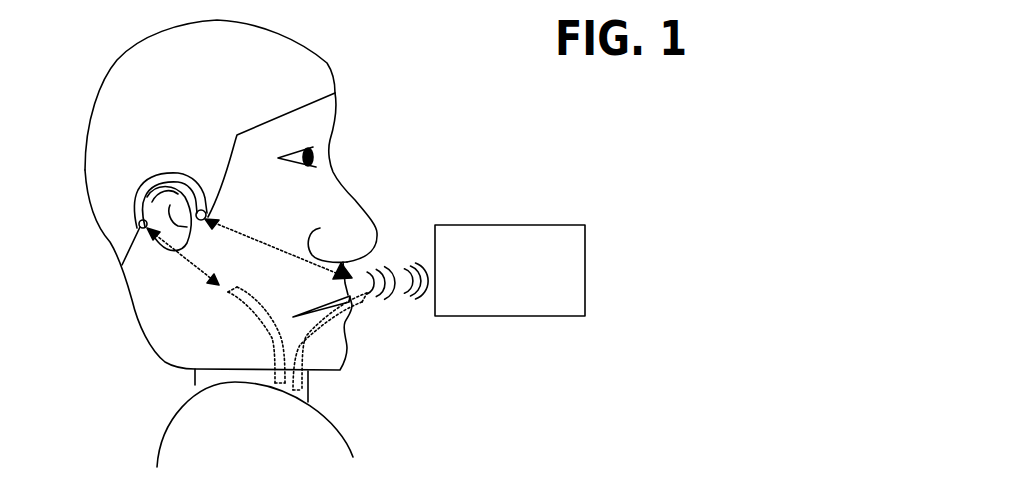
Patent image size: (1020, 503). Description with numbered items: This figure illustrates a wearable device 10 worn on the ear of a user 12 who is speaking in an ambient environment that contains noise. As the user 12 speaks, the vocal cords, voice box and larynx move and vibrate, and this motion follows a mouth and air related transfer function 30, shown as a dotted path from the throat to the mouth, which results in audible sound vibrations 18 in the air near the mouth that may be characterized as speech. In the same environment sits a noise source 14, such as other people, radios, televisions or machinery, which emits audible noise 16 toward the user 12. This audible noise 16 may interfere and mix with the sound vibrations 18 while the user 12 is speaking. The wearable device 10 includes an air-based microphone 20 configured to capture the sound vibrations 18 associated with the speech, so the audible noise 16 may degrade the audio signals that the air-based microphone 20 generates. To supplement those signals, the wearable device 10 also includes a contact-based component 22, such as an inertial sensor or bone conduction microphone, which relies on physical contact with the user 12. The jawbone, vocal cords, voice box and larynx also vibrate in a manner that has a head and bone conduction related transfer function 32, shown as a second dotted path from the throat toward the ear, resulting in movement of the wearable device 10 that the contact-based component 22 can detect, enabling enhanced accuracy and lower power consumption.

The wearable device 10 is at (147, 175).
The user 12 is at (337, 65).
The noise source 14 is at (585, 260).
The audible noise 16 is at (417, 306).
The sound vibrations 18 is at (383, 270).
The air-based microphone 20 is at (183, 182).
The contact-based component 22 is at (140, 225).
The mouth and air related transfer function 30 is at (305, 345).
The head and bone conduction related transfer function 32 is at (258, 305).